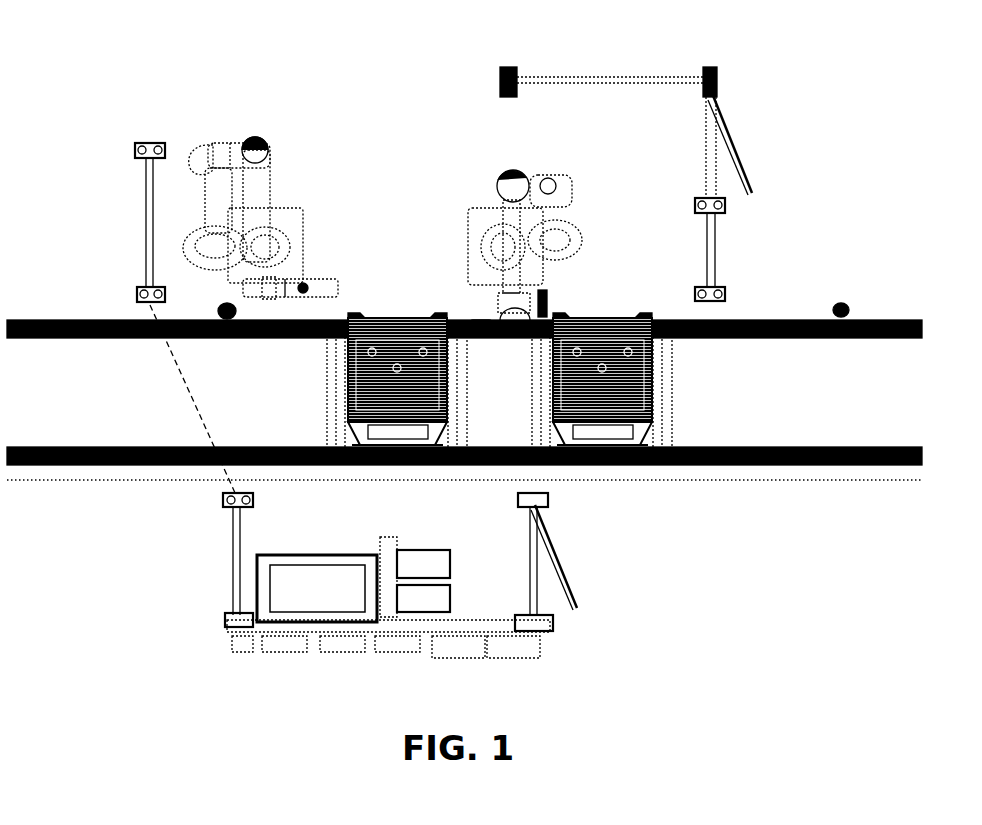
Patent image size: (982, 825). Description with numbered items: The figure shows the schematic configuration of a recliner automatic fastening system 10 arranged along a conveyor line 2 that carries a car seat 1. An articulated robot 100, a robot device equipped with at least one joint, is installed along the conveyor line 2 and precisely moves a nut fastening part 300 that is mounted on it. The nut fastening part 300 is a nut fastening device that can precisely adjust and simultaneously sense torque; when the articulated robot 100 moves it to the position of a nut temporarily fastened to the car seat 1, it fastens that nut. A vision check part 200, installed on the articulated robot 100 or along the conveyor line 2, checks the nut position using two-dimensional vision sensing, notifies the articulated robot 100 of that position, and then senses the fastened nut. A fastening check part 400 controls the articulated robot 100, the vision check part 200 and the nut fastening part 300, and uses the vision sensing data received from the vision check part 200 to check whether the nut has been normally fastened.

The recliner automatic fastening system 10 is at (80, 48).
The articulated robot 100 is at (270, 157).
The vision check part 200 is at (508, 76).
The nut fastening part 300 is at (305, 288).
The car seat 1 is at (416, 313).
The conveyor line 2 is at (824, 462).
The fastening check part 400 is at (262, 586).